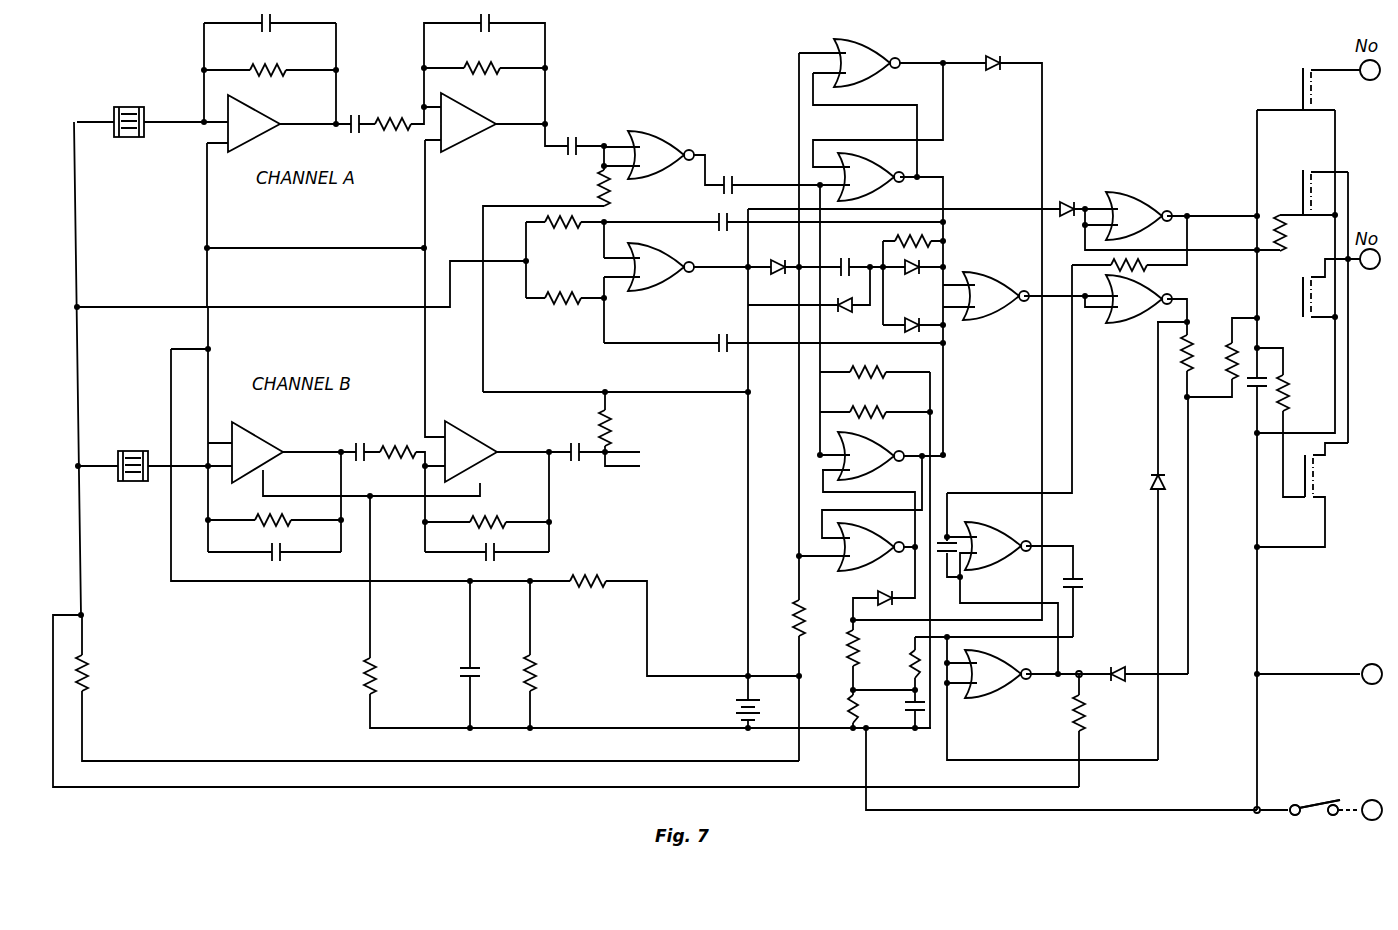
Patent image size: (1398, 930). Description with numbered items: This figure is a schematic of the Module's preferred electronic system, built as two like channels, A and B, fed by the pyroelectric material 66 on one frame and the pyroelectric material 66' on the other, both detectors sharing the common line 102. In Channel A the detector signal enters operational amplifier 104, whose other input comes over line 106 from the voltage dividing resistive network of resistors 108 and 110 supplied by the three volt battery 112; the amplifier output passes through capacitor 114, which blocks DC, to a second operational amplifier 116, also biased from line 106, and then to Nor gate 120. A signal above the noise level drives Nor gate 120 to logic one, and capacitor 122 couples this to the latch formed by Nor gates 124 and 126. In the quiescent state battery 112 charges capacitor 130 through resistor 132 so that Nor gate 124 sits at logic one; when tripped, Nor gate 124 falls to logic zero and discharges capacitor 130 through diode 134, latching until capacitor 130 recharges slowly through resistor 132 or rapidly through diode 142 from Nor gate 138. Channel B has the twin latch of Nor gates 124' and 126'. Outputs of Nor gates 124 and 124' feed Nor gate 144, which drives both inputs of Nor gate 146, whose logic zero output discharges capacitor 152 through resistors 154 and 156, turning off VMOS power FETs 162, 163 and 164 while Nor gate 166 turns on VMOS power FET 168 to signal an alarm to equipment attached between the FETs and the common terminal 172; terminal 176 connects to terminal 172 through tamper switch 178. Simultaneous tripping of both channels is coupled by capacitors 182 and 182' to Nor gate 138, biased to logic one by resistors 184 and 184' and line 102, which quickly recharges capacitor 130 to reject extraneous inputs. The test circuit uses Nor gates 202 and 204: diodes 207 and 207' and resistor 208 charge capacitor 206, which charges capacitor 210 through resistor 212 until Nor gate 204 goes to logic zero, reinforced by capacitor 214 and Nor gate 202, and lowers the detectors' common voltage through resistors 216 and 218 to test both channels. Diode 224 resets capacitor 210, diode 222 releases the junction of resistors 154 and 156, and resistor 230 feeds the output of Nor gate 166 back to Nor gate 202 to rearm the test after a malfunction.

The pyroelectric material 66 is at (131, 134).
The pyroelectric material 66' is at (134, 445).
The common line 102 is at (136, 307).
The operational amplifier 104 is at (258, 136).
The line 106 is at (207, 220).
The resistor 108 is at (590, 578).
The resistor 110 is at (538, 676).
The battery 112 is at (736, 696).
The capacitor 114 is at (355, 115).
The second operational amplifier 116 is at (470, 140).
The Nor gate 120 is at (672, 131).
The capacitor 122 is at (733, 178).
The Nor gate 124 is at (882, 181).
The Nor gate 124' is at (879, 454).
The Nor gate 126 is at (885, 54).
The Nor gate 126' is at (872, 543).
The capacitor 130 is at (845, 256).
The resistor 132 is at (797, 620).
The diode 134 is at (905, 278).
The Nor gate 138 is at (680, 283).
The diode 142 is at (782, 278).
The Nor gate 144 is at (972, 272).
The Nor gate 146 is at (1132, 326).
The capacitor 152 is at (1254, 394).
The resistor 154 is at (1187, 332).
The resistor 156 is at (1230, 342).
The VMOS power FET 162 is at (1302, 298).
The VMOS power FET 163 is at (1302, 192).
The VMOS power FET 164 is at (1318, 490).
The Nor gate 166 is at (1130, 192).
The VMOS power FET 168 is at (1301, 86).
The common or ground terminal 172 is at (1378, 824).
The terminal 176 is at (1360, 686).
The tamper switch 178 is at (1318, 802).
The capacitor 182 is at (694, 209).
The capacitor 182' is at (694, 331).
The resistor 184 is at (563, 239).
The resistor 184' is at (563, 315).
The Nor gate 202 is at (990, 568).
The Nor gate 204 is at (990, 700).
The capacitor 206 is at (909, 703).
The diode 207 is at (1011, 42).
The diode 207' is at (859, 594).
The resistor 208 is at (852, 666).
The capacitor 210 is at (1085, 580).
The resistor 212 is at (909, 664).
The capacitor 214 is at (940, 532).
The resistor 216 is at (1085, 720).
The resistor 218 is at (88, 672).
The diode 222 is at (1121, 669).
The diode 224 is at (1151, 489).
The resistor 230 is at (1150, 272).